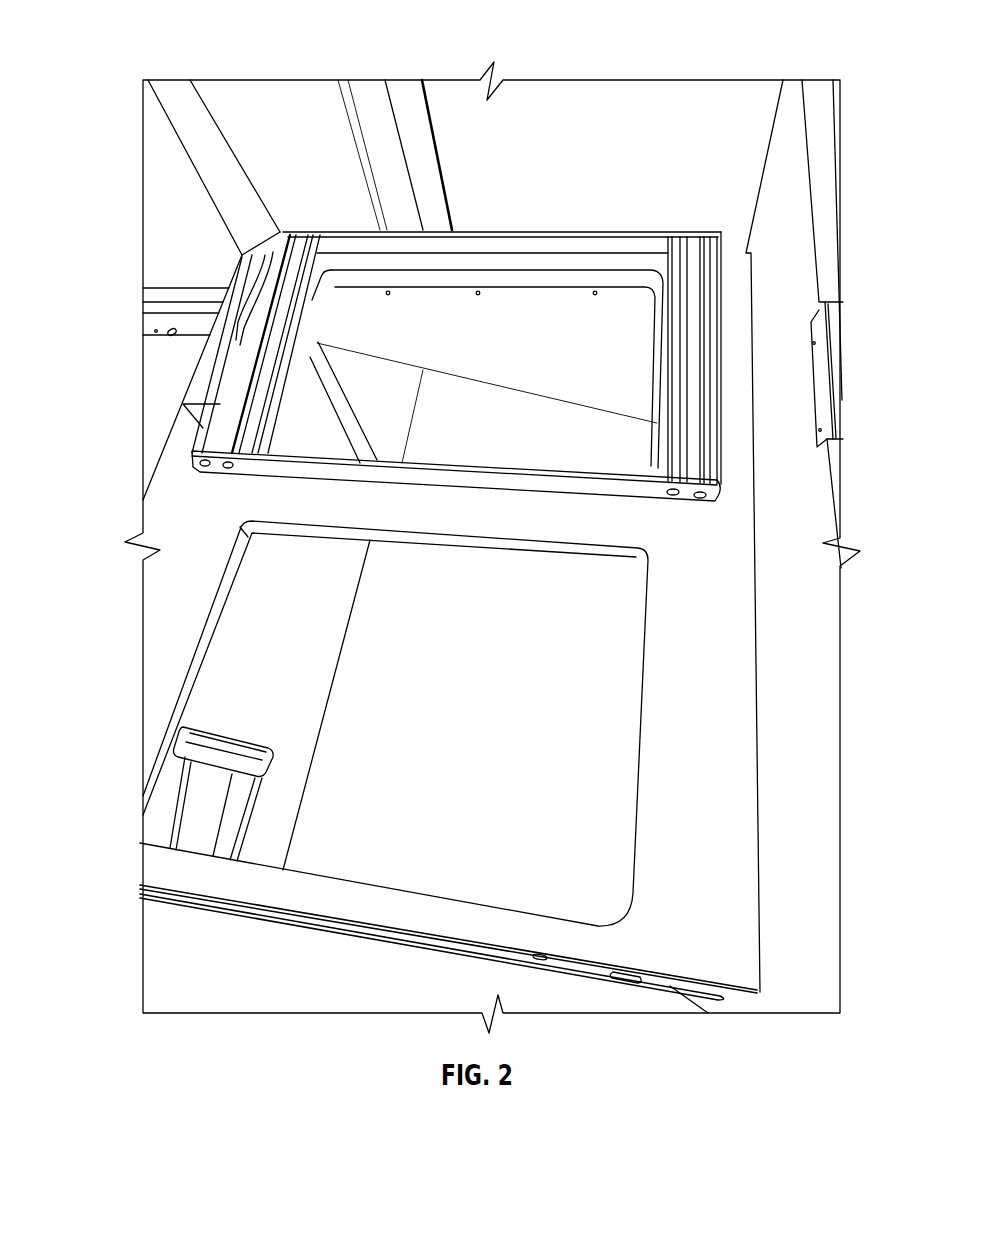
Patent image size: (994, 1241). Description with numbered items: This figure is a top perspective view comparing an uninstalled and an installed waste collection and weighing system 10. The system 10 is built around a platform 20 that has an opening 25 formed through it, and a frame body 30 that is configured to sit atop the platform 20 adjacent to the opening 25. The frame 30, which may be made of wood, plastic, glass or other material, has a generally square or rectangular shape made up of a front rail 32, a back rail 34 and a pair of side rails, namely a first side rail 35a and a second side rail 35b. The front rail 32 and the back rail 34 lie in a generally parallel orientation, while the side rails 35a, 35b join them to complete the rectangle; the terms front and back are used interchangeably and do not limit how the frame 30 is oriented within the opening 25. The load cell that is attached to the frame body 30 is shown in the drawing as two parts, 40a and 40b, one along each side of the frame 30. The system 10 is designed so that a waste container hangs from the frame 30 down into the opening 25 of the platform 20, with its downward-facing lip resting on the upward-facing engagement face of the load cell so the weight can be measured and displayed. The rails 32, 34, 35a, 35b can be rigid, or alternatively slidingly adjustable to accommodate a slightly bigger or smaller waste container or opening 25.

The waste collection and weighing system 10 is at (219, 256).
The platform 20 is at (730, 569).
The opening 25 is at (376, 398).
The frame body 30 is at (558, 245).
The front rail 32 is at (718, 428).
The back rail 34 is at (222, 388).
The first side rail 35a is at (407, 240).
The second side rail 35b is at (290, 468).
The right guide rail 40a is at (697, 290).
The left guide rail 40b is at (270, 305).